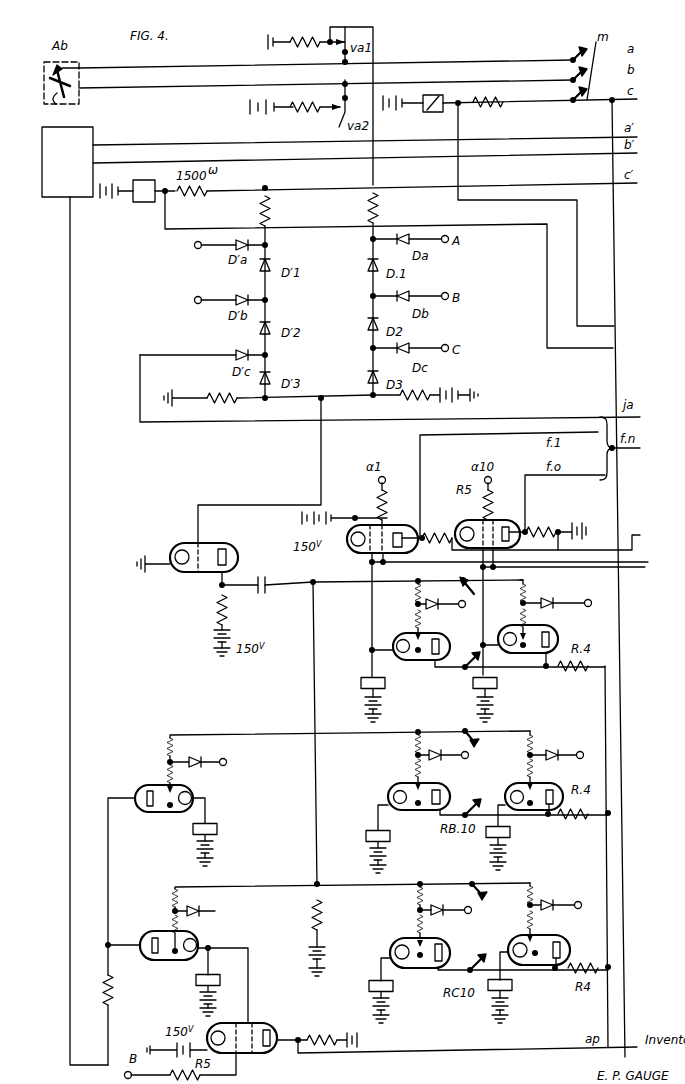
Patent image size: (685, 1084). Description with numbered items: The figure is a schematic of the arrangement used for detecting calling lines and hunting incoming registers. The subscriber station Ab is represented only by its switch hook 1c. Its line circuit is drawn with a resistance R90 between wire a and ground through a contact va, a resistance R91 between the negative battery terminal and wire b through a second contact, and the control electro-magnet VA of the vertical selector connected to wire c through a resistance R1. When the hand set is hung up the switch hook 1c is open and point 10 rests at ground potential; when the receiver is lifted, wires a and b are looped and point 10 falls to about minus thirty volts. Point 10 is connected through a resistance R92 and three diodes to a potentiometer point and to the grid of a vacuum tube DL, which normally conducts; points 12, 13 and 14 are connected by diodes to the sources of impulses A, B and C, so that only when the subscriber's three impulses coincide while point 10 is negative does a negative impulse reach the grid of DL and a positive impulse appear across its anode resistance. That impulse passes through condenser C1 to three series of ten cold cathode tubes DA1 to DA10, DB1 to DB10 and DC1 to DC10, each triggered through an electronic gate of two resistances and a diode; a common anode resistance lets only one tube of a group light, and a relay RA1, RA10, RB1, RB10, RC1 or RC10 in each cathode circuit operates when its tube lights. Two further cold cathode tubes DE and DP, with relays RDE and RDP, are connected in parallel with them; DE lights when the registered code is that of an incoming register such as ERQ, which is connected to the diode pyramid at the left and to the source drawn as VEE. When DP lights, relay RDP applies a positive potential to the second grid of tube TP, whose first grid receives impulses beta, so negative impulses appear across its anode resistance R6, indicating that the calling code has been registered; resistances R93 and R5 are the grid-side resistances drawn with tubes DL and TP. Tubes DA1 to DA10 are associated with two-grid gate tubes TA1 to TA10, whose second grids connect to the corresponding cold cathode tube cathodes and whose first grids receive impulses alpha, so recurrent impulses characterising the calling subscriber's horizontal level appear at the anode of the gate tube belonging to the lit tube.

The point 10 is at (362, 106).
The point 12 is at (362, 241).
The point 13 is at (362, 298).
The point 14 is at (362, 350).
The switch hook 1c is at (60, 94).
The incoming register ERQ is at (67, 162).
The voltage unit VEE is at (137, 202).
The resistor R90 is at (306, 34).
The resistor R91 is at (295, 117).
The resistor R92 is at (355, 209).
The resistance R1 is at (488, 112).
The voltage source VA is at (413, 103).
The vacuum tube DL is at (204, 548).
The condenser C1 is at (256, 595).
The resistor R93 is at (238, 613).
The electronic gate tube TA1 is at (370, 550).
The electronic gate tube TA10 is at (494, 522).
The resistor R5 is at (393, 504).
The cold cathode tube DA1 is at (424, 632).
The cold cathode tube DA10 is at (553, 624).
The relay RA1 is at (371, 700).
The relay RA10 is at (505, 700).
The cold cathode tube DE is at (179, 775).
The relay RDE is at (222, 832).
The cold cathode tube DB1 is at (435, 781).
The cold cathode tube DB10 is at (545, 785).
The relay RB1 is at (377, 839).
The relay RB10 is at (518, 837).
The cold cathode tube DP is at (177, 924).
The relay RDP is at (199, 982).
The cold cathode tube DC1 is at (424, 937).
The cold cathode tube DC10 is at (551, 925).
The relay RC1 is at (377, 990).
The relay RC10 is at (518, 987).
The tube TP is at (242, 1031).
The anode resistance R6 is at (317, 1032).